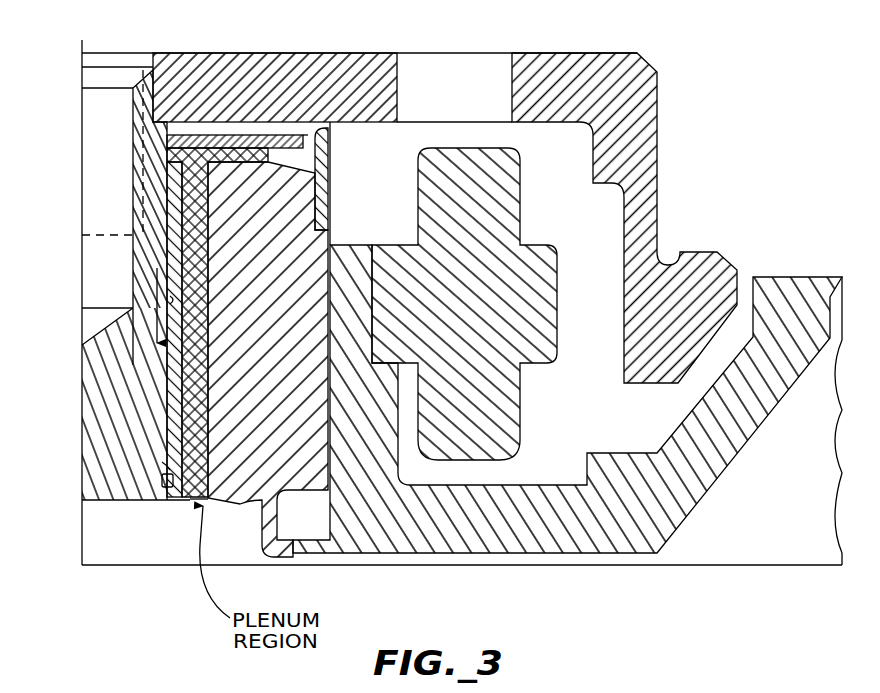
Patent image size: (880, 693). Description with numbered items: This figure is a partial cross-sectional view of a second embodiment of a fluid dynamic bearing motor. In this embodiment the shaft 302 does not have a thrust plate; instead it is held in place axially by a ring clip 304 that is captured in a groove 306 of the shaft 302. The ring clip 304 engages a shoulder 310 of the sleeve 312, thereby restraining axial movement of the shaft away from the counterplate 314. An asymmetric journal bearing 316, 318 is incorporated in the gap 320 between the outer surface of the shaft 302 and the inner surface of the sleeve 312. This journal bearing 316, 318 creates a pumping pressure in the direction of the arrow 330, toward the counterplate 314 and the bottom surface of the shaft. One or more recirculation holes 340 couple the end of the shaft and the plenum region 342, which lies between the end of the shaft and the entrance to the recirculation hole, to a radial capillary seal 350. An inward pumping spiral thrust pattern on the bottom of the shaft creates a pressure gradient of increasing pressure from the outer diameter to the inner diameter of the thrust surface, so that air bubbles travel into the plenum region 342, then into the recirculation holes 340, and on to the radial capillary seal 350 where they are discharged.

The shaft 302 is at (152, 70).
The ring clip 304 is at (161, 484).
The groove 306 is at (165, 468).
The shoulder 310 is at (170, 435).
The sleeve 312 is at (305, 465).
The counterplate 314 is at (237, 545).
The asymmetric journal bearing 316 is at (167, 218).
The asymmetric journal bearing 318 is at (167, 405).
The gap 320 is at (172, 300).
The arrow 330 is at (157, 268).
The recirculation holes 340 is at (245, 158).
The plenum region 342 is at (193, 503).
The radial capillary seal 350 is at (224, 195).